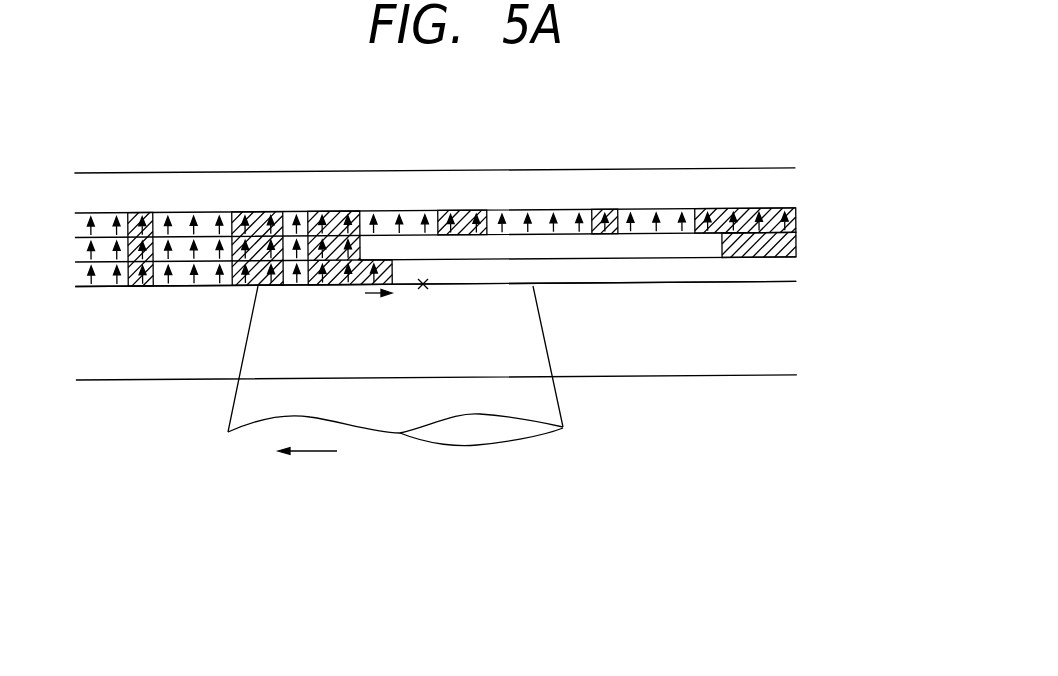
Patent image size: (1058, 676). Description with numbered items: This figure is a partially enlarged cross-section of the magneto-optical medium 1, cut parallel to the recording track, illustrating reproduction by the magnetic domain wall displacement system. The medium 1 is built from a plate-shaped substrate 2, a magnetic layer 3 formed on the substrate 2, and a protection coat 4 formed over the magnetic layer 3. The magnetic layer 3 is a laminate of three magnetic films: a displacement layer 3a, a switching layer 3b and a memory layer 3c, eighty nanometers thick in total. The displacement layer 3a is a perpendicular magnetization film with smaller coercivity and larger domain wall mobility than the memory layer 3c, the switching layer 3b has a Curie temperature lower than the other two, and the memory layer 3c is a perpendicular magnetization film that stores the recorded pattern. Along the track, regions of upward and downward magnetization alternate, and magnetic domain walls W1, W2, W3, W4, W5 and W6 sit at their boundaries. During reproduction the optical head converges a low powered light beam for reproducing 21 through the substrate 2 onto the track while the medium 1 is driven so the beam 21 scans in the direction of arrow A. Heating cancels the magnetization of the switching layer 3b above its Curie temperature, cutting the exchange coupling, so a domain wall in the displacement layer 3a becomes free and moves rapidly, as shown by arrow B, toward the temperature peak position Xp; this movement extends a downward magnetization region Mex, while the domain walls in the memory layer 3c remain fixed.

The magneto-optical medium 1 is at (705, 157).
The substrate 2 is at (800, 340).
The magnetic layer 3 is at (862, 210).
The displacement layer 3a is at (800, 277).
The switching layer 3b is at (800, 250).
The memory layer 3c is at (800, 225).
The protection coat 4 is at (800, 193).
The light beam for reproducing 21 is at (479, 441).
The magnetic domain wall W1 is at (360, 213).
The magnetic domain wall W2 is at (310, 213).
The magnetic domain wall W3 is at (286, 213).
The magnetic domain wall W4 is at (233, 213).
The magnetic domain wall W5 is at (155, 213).
The magnetic domain wall W6 is at (130, 213).
The magnetization region Mex is at (369, 277).
The peak position of temperature Xp is at (429, 301).
The scanning direction arrow A is at (307, 466).
The domain wall movement arrow B is at (378, 309).